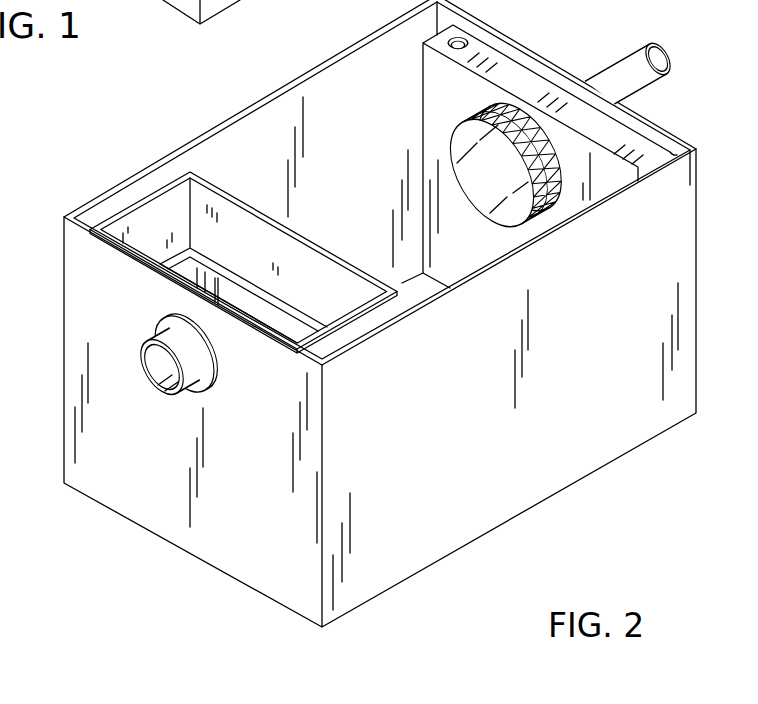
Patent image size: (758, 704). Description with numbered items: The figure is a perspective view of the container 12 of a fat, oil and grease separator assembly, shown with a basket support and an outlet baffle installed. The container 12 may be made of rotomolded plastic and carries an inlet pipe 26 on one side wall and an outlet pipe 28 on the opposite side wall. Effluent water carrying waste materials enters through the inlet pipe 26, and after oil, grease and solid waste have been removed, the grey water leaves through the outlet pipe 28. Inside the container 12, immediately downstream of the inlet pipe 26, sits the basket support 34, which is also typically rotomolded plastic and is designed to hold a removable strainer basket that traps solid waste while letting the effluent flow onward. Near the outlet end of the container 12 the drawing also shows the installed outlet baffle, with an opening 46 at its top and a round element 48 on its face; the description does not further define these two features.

The container 12 is at (482, 418).
The inlet pipe 26 is at (147, 343).
The outlet pipe 28 is at (637, 52).
The basket support 34 is at (170, 213).
The aperture 46 is at (430, 40).
The baffle plug 48 is at (505, 183).